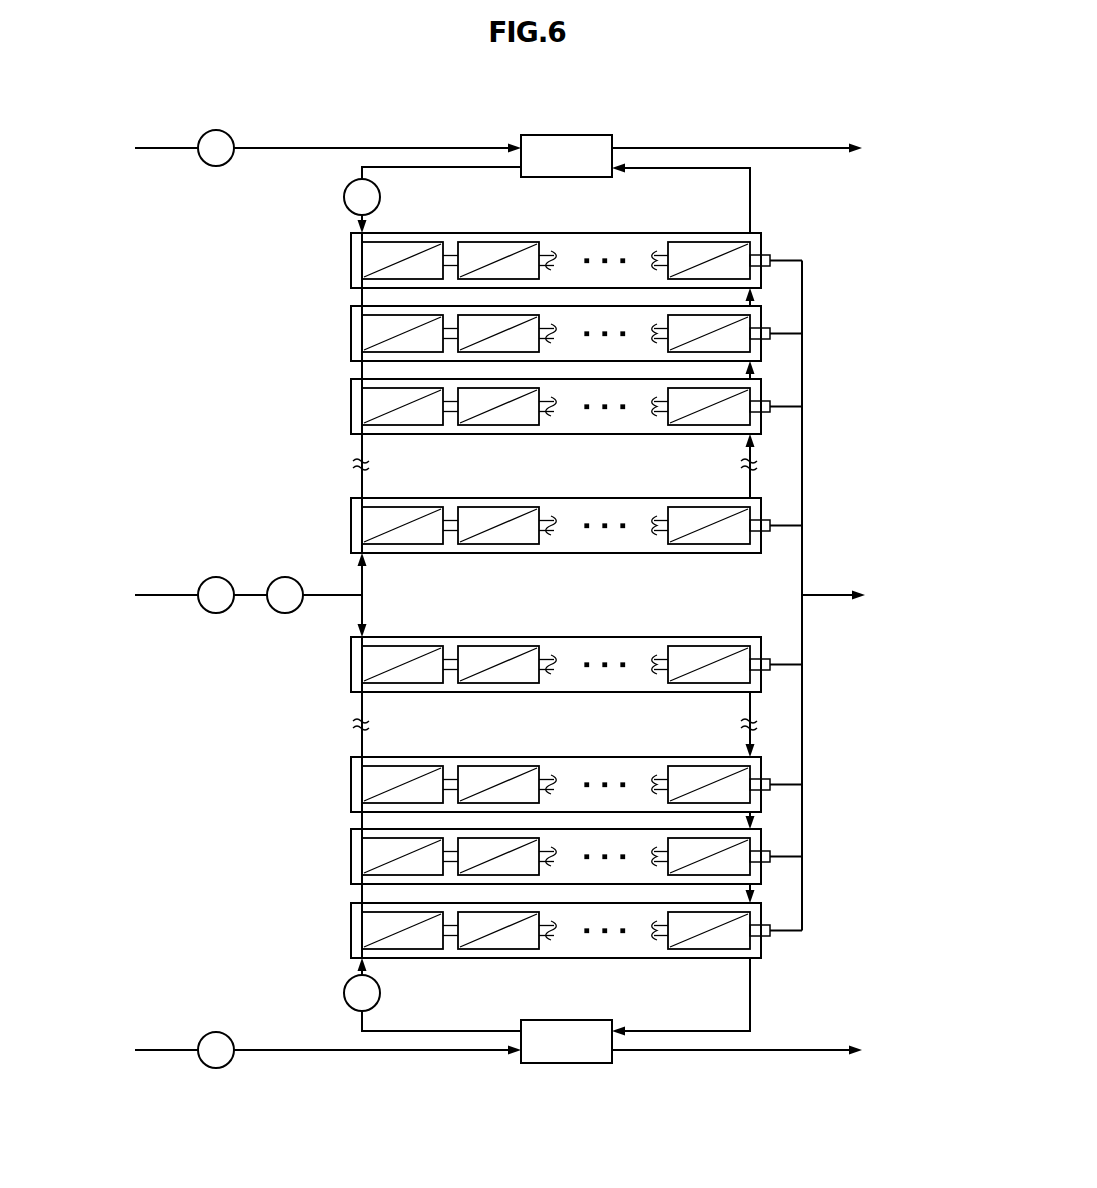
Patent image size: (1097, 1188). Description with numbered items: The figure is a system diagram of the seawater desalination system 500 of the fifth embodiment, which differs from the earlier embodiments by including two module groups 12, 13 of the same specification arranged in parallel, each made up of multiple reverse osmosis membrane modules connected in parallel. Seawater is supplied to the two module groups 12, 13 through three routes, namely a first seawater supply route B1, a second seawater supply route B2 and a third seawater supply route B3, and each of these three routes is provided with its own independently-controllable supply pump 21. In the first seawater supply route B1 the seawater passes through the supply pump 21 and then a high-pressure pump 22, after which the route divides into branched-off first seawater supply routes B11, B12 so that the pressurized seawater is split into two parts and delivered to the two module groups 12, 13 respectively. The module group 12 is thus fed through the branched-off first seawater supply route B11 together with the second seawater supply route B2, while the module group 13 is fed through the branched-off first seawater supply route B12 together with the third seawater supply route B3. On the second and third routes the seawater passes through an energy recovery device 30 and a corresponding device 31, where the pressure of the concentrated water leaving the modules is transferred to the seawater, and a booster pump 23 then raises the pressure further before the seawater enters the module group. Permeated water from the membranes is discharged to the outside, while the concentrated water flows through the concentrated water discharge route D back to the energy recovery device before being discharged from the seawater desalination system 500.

The seawater desalination system 500 is at (489, 120).
The module group 12 is at (345, 637).
The module group 13 is at (345, 233).
The supply pump 21 is at (217, 130).
The high-pressure pump 22 is at (285, 614).
The booster pump 23 is at (380, 198).
The energy recovery device 30 is at (578, 135).
The energy recovery device 31 is at (566, 1064).
The first seawater supply route B1 is at (338, 594).
The second seawater supply route B2 is at (336, 1052).
The third seawater supply route B3 is at (335, 146).
The branched-off first seawater supply route B11 is at (363, 613).
The branched-off first seawater supply route B12 is at (363, 584).
The concentrated water discharge route D is at (750, 183).